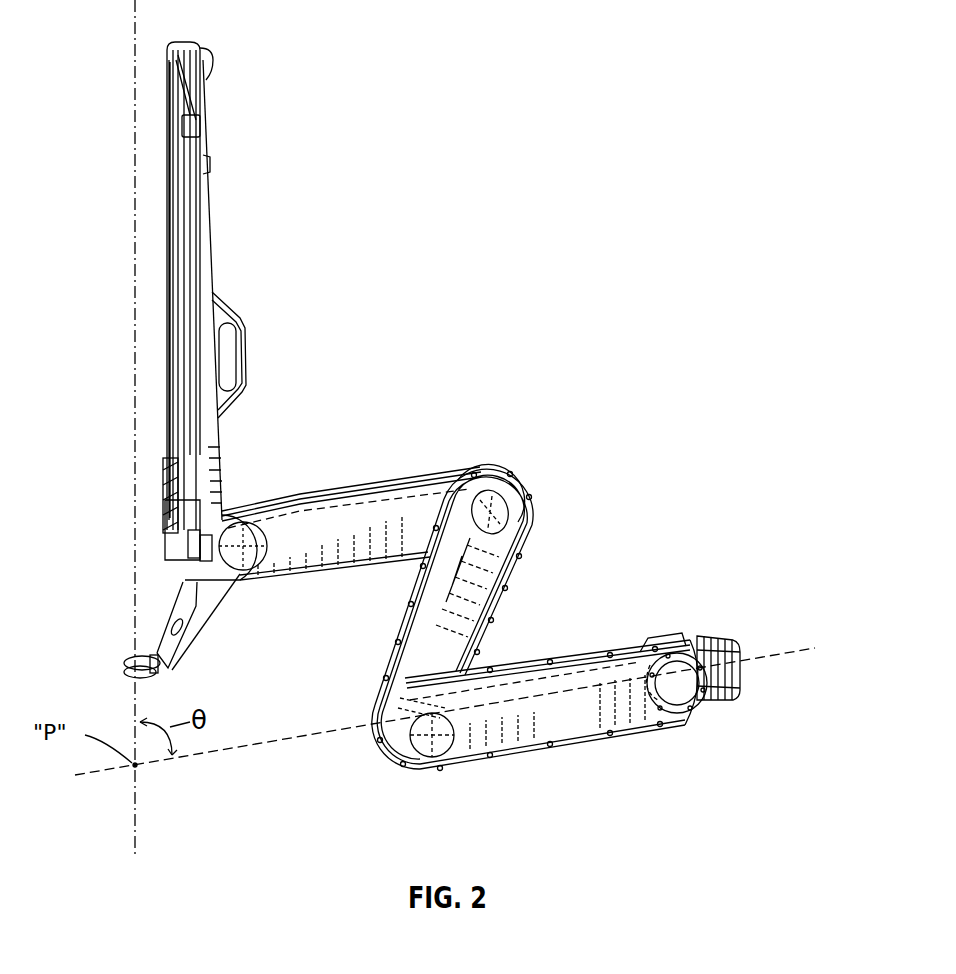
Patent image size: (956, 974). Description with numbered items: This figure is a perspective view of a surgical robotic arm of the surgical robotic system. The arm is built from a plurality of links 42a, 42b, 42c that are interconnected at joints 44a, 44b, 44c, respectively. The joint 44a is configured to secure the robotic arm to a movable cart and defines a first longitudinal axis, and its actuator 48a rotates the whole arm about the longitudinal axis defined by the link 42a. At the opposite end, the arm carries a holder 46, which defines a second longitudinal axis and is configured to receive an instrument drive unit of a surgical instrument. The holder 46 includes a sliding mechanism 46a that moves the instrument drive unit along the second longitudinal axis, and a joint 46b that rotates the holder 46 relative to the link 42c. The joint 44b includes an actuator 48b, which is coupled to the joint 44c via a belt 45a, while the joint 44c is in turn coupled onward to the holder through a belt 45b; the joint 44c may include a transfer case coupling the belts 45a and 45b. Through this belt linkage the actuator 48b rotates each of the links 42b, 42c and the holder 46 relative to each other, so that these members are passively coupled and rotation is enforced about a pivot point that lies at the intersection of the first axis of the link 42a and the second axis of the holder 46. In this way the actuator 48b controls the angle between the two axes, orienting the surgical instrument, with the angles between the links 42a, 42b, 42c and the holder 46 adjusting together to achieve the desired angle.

The holder 46 is at (200, 97).
The sliding mechanism 46a is at (162, 232).
The joint 46b is at (233, 527).
The link 42c is at (317, 497).
The belt 45b is at (417, 490).
The joint 44c is at (517, 515).
The belt 45a is at (485, 548).
The link 42b is at (476, 637).
The joint 44b is at (430, 760).
The actuator 48b is at (392, 730).
The link 42a is at (568, 728).
The joint 44a is at (733, 693).
The actuator 48a is at (715, 636).